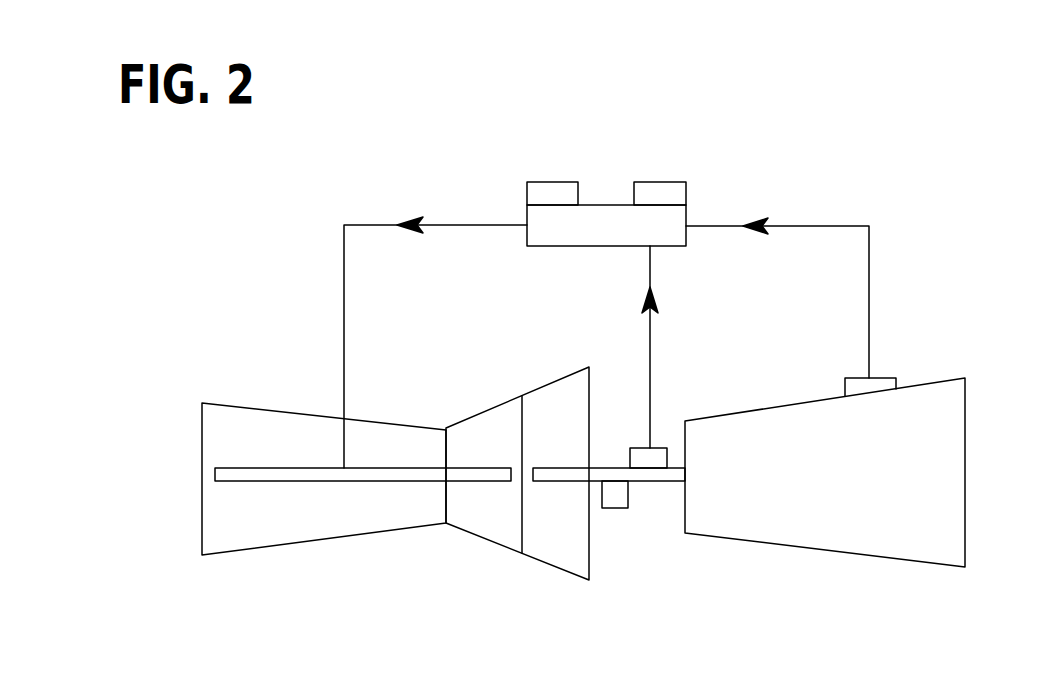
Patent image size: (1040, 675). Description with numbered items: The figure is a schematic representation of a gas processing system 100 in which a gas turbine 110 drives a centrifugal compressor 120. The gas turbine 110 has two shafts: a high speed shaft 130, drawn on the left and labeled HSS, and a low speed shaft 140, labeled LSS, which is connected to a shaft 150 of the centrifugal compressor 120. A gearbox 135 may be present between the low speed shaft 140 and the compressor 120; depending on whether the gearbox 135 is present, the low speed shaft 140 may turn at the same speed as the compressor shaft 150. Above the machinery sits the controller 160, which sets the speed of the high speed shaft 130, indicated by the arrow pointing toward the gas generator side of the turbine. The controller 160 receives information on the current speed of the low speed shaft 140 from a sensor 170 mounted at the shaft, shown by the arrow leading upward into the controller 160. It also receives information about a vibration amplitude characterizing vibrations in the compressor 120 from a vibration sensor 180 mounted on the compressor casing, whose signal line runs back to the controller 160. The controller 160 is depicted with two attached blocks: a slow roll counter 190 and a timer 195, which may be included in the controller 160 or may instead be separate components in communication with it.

The gas processing system 100 is at (700, 120).
The gas turbine 110 is at (210, 555).
The centrifugal compressor 120 is at (886, 558).
The high speed shaft 130 is at (257, 481).
The gearbox 135 is at (612, 510).
The low speed shaft 140 is at (560, 482).
The shaft of the centrifugal compressor 150 is at (673, 482).
The controller 160 is at (597, 246).
The sensor 170 is at (632, 448).
The vibration sensor 180 is at (882, 378).
The slow roll counter 190 is at (547, 182).
The timer 195 is at (663, 182).